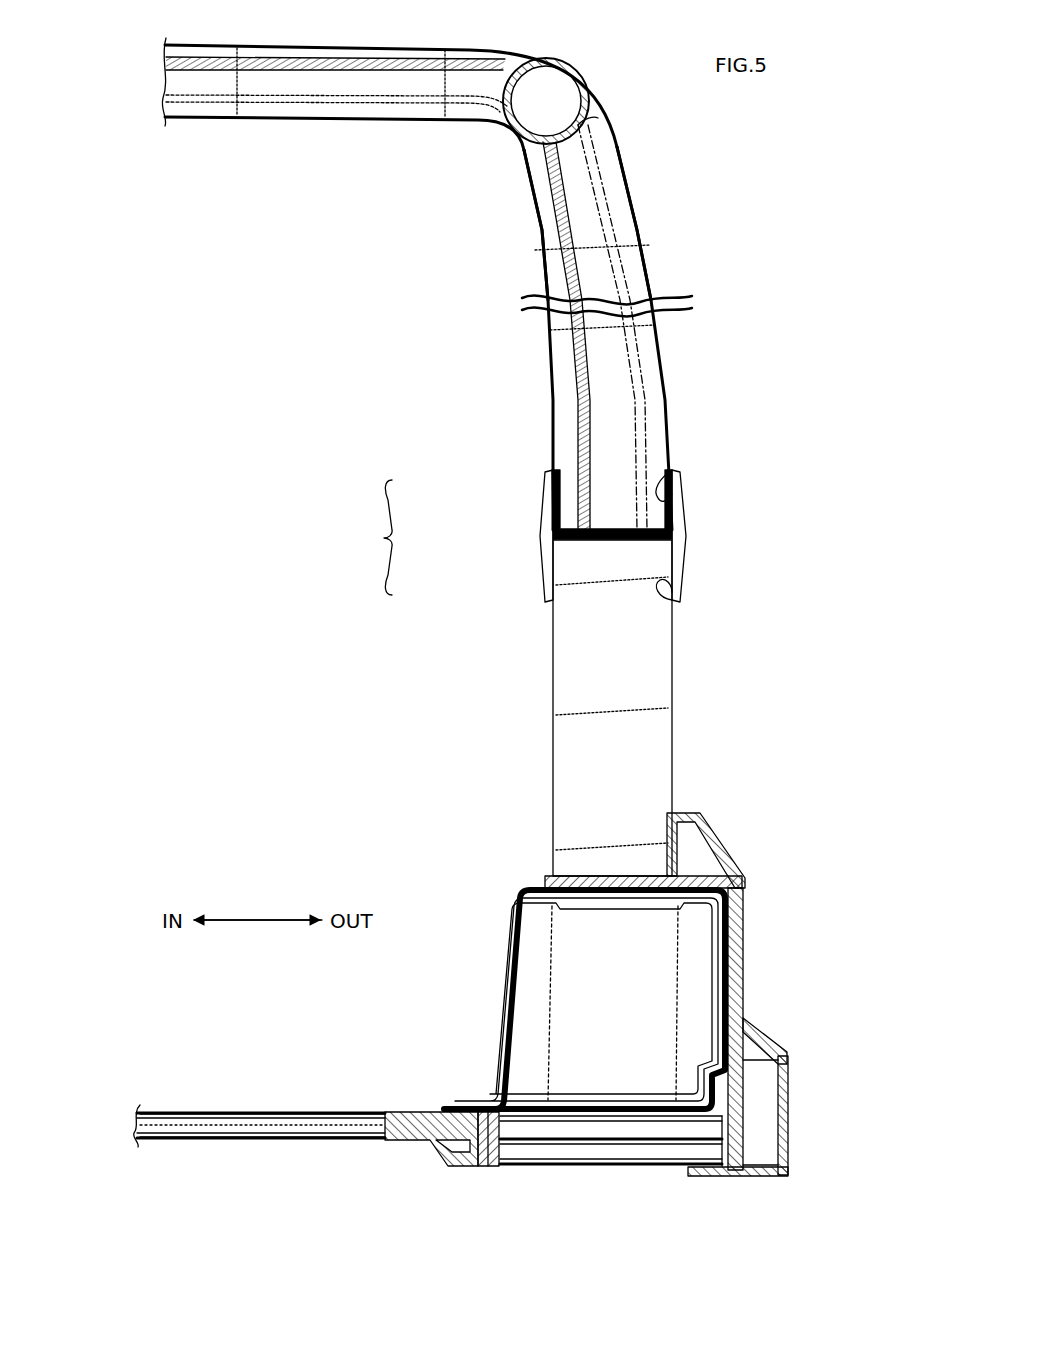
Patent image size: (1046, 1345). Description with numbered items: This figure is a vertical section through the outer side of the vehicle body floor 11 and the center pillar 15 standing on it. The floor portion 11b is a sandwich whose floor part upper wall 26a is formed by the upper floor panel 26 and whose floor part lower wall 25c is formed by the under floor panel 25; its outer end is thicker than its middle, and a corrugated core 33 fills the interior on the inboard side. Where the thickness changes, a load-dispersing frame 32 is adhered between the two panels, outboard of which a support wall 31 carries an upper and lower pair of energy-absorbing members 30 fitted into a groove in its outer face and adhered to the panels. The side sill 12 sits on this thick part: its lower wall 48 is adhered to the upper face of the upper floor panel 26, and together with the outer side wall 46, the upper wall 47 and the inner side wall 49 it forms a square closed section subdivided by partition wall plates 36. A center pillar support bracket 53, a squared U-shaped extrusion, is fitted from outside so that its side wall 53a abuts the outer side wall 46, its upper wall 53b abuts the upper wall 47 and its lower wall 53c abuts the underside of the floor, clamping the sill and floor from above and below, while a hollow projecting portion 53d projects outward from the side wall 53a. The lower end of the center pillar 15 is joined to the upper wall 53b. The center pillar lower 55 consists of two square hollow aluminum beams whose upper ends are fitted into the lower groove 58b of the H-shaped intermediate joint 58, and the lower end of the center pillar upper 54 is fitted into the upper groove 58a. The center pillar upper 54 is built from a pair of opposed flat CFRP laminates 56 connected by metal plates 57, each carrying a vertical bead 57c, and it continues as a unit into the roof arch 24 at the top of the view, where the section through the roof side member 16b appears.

The vehicle body floor 11 is at (163, 1083).
The floor portion 11b is at (313, 1109).
The side sill 12 is at (513, 896).
The center pillar 15 is at (377, 537).
The roof side member 16b is at (570, 64).
The roof arch 24 is at (306, 120).
The under floor panel 25 is at (259, 1121).
The floor part lower wall 25c is at (302, 1141).
The upper floor panel 26 is at (178, 1109).
The floor part upper wall 26a is at (250, 1111).
The energy-absorbing member 30 is at (562, 1156).
The support wall 31 is at (489, 1166).
The load-dispersing frame 32 is at (445, 1166).
The corrugated core 33 is at (252, 1133).
The partition wall plate 36 is at (546, 1010).
The outer side wall 46 is at (621, 999).
The upper wall 47 is at (590, 884).
The lower wall 48 is at (640, 1121).
The inner side wall 49 is at (520, 948).
The center pillar support bracket 53 is at (725, 1015).
The side wall 53a is at (746, 988).
The upper wall 53b is at (645, 872).
The lower wall 53c is at (706, 1177).
The hollow projecting portion 53d is at (789, 1110).
The center pillar upper 54 is at (560, 328).
The center pillar lower 55 is at (550, 656).
The CFRP laminate 56 is at (540, 248).
The metal plate 57 is at (572, 400).
The bead 57c is at (633, 398).
The intermediate joint 58 is at (661, 537).
The groove 58a is at (668, 492).
The groove 58b is at (664, 605).